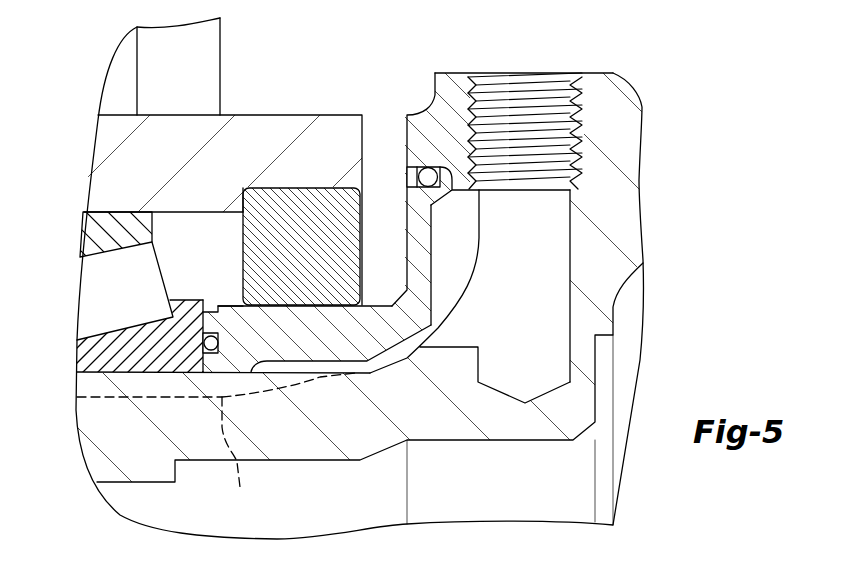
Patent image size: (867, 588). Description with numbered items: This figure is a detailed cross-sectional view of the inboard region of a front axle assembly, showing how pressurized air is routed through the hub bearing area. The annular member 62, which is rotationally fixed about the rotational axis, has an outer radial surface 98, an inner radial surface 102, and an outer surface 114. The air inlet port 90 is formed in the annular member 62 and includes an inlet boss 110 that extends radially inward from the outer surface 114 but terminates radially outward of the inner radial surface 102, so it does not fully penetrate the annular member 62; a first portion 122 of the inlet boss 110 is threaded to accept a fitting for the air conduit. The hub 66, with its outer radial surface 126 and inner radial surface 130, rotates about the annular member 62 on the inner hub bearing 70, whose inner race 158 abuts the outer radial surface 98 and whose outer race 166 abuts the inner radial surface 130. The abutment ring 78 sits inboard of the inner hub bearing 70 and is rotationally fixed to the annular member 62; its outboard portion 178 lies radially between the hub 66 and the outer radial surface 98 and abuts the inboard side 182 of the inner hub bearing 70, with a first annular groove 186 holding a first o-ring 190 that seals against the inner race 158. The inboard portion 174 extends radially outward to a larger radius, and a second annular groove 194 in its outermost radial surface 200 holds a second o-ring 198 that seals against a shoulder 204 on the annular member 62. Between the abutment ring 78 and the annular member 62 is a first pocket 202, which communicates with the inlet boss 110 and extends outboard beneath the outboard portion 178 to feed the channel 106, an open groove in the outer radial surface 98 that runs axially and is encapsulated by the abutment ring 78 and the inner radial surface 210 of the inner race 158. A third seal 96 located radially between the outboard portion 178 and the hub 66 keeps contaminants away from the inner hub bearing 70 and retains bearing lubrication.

The annular member 62 is at (103, 457).
The hub 66 is at (110, 158).
The inner hub bearing 70 is at (97, 302).
The abutment ring 78 is at (397, 325).
The air inlet port 90 is at (518, 78).
The third seal 96 is at (292, 197).
The outer radial surface 98 is at (352, 380).
The inner radial surface 102 is at (140, 482).
The channel 106 is at (288, 442).
The inlet boss 110 is at (573, 215).
The outer surface 114 is at (593, 73).
The first portion 122 is at (578, 138).
The outer radial surface 126 is at (117, 115).
The inner radial surface 130 is at (118, 212).
The inner race 158 is at (90, 358).
The outer race 166 is at (103, 227).
The inboard portion 174 is at (418, 225).
The outboard portion 178 is at (298, 313).
The inboard side 182 is at (207, 298).
The first annular groove 186 is at (220, 345).
The first o-ring 190 is at (210, 350).
The second annular groove 194 is at (417, 180).
The second o-ring 198 is at (428, 168).
The outermost radial surface 200 is at (428, 172).
The first pocket 202 is at (458, 265).
The shoulder 204 is at (438, 167).
The inner radial surface 210 is at (173, 373).